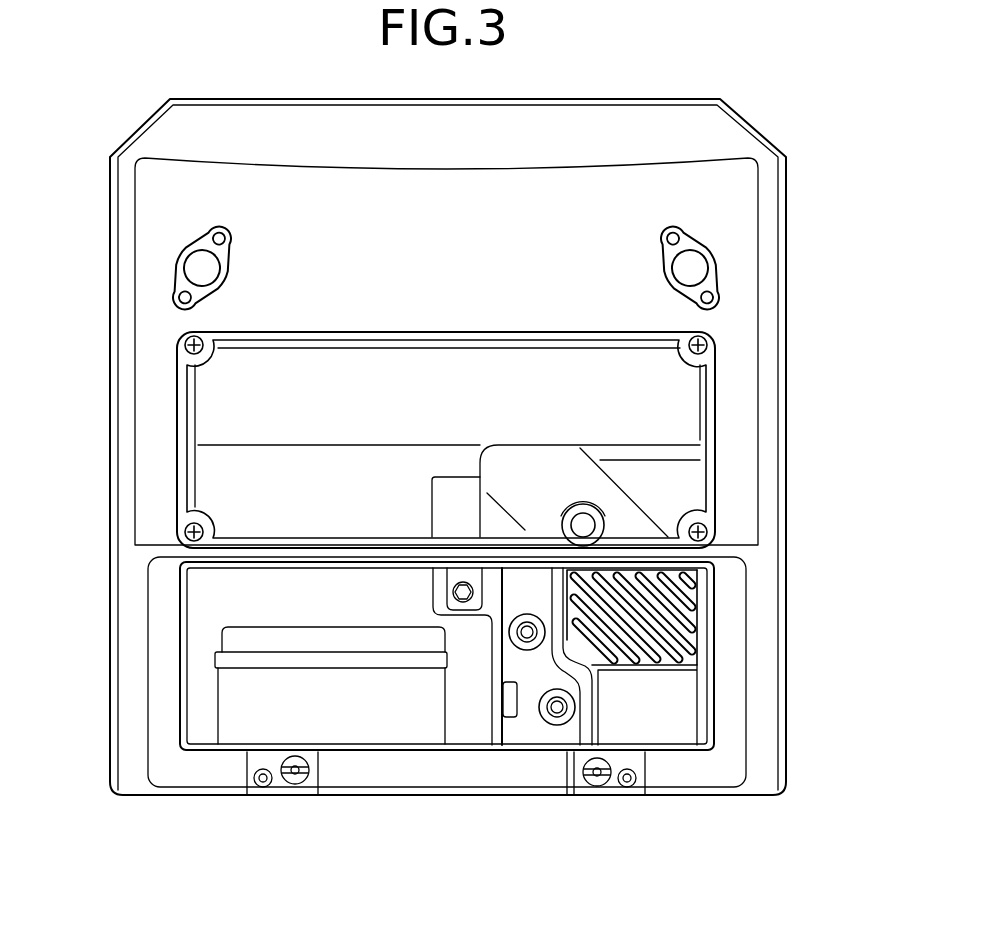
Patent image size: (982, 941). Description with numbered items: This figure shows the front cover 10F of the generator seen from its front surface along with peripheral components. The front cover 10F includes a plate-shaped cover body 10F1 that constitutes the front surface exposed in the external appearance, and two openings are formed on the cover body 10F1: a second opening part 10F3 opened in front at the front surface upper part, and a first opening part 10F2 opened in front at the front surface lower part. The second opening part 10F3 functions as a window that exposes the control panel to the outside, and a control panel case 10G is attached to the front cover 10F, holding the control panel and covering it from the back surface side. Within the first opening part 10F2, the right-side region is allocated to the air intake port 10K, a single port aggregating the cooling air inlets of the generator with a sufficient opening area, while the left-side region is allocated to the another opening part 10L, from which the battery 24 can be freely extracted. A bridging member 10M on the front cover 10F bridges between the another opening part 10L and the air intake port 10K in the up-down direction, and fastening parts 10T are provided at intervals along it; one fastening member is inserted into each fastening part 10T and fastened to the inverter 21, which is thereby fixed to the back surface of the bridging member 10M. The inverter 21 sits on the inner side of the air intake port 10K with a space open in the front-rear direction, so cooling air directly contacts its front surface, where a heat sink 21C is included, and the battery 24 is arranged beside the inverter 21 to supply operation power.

The front cover 10F is at (120, 143).
The cover body 10F1 is at (760, 237).
The second opening part 10F3 is at (703, 410).
The control panel case 10G is at (680, 485).
The first opening part 10F2 is at (690, 563).
The another opening part 10L is at (183, 608).
The battery 24 is at (243, 718).
The bridging member 10M is at (497, 675).
The fastening parts 10T is at (525, 643).
The inverter 21 is at (697, 610).
The heat sink 21C is at (697, 637).
The air intake port 10K is at (697, 717).